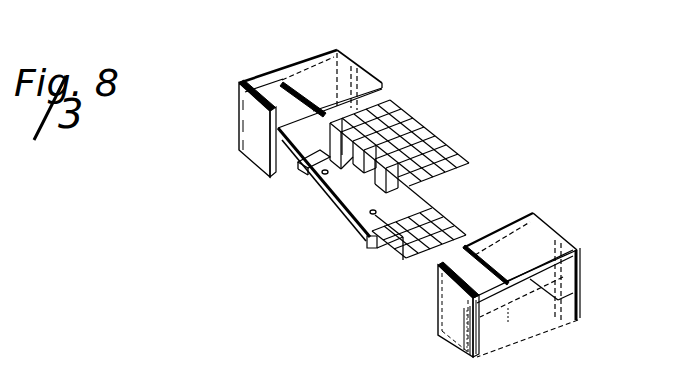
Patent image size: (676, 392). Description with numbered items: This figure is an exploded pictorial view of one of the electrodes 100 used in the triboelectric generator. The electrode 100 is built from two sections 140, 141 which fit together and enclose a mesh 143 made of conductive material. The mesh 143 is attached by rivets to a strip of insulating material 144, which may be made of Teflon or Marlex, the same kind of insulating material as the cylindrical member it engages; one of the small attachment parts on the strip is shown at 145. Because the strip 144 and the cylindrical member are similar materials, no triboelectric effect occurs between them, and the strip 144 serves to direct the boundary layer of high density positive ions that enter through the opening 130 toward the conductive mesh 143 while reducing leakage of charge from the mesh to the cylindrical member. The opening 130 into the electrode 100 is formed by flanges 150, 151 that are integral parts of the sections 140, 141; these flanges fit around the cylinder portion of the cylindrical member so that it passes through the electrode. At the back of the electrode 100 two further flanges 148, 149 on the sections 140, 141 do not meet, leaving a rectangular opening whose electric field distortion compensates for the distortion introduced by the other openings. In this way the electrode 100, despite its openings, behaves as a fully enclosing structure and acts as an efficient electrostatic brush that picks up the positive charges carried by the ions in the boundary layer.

The section 140 is at (312, 66).
The opening 130 is at (281, 101).
The flange 151 is at (258, 152).
The flange 149 is at (388, 95).
The strip of insulating material 144 is at (367, 242).
The block 145 is at (305, 176).
The mesh 143 is at (408, 130).
The electrode 100 is at (295, 234).
The section 141 is at (581, 314).
The flange 148 is at (581, 262).
The flange 150 is at (440, 333).